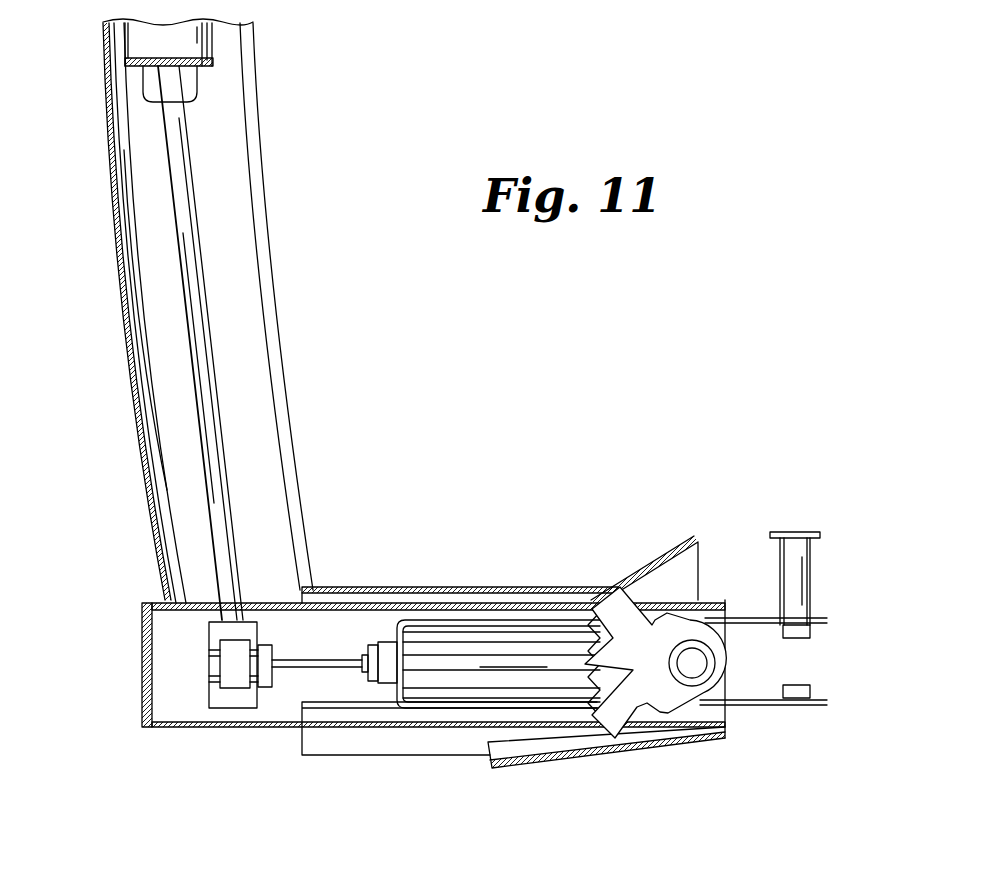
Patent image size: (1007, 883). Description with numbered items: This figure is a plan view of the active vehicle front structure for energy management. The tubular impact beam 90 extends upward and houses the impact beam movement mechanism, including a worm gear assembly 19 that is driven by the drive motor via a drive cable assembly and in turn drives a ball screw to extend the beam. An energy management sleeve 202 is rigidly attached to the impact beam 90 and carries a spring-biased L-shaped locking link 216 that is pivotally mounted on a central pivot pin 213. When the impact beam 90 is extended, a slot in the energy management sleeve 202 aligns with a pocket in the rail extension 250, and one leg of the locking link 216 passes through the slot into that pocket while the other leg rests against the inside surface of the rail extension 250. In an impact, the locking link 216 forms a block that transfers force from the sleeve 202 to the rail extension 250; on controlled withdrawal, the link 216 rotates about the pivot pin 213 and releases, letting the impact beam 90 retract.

The impact beam 90 is at (143, 471).
The worm gear assembly 19 is at (237, 693).
The energy management sleeve 202 is at (260, 727).
The rail extension 250 is at (387, 738).
The L-shaped locking link 216 is at (630, 705).
The central pivot pin 213 is at (692, 663).